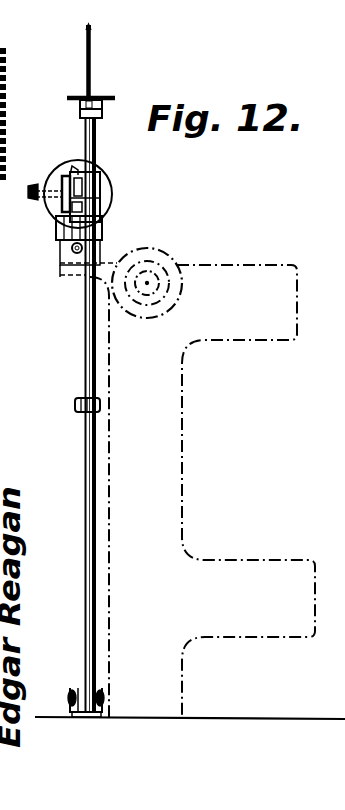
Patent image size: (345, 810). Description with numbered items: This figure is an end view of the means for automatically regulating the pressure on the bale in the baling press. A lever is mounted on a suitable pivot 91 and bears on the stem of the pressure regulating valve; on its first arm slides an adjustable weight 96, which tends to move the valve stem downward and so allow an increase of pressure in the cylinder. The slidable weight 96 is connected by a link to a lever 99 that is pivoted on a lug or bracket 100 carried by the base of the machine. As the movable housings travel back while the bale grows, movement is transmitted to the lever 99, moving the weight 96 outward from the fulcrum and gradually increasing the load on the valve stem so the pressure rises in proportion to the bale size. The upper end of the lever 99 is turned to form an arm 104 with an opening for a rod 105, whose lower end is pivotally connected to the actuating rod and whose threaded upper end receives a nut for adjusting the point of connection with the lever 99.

The pivot 91 is at (112, 193).
The adjustable weight 96 is at (65, 218).
The lever 99 is at (88, 519).
The lug or bracket 100 is at (96, 703).
The arm 104 is at (80, 110).
The rod 105 is at (85, 64).